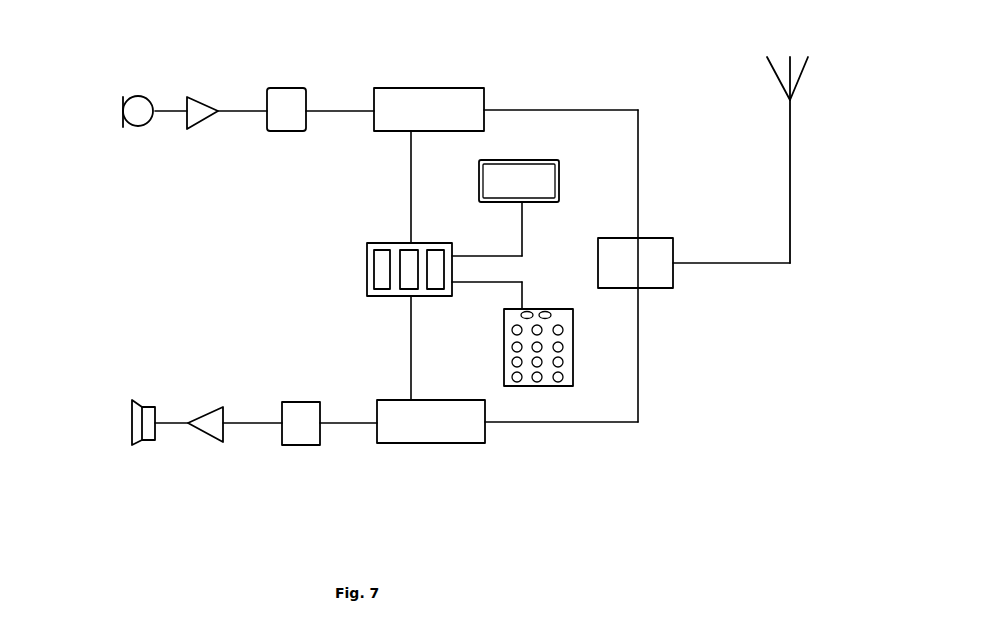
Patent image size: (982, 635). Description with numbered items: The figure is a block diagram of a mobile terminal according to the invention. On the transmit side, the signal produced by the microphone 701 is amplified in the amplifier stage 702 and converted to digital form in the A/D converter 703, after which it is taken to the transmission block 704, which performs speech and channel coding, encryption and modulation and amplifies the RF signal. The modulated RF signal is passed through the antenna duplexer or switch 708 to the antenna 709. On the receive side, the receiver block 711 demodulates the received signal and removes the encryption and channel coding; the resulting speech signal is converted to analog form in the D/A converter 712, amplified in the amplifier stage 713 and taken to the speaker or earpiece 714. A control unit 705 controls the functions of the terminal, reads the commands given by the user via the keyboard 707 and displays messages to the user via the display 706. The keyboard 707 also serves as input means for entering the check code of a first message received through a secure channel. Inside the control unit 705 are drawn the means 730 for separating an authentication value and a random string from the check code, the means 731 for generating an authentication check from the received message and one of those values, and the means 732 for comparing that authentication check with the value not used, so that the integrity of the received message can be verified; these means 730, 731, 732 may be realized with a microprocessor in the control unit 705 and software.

The microphone 701 is at (138, 83).
The amplifier stage 702 is at (202, 83).
The A/D converter 703 is at (286, 78).
The transmission block 704 is at (429, 78).
The control unit 705 is at (371, 269).
The display 706 is at (562, 178).
The keyboard 707 is at (565, 352).
The antenna duplexer or switch 708 is at (664, 281).
The antenna 709 is at (814, 160).
The receiver block 711 is at (431, 455).
The D/A converter 712 is at (315, 466).
The amplifier stage 713 is at (218, 463).
The speaker or earpiece 714 is at (137, 455).
The means for separating an authentication value and a random string 730 is at (342, 258).
The means for generating an authentication check 731 is at (363, 249).
The means for comparing the authentication check 732 is at (388, 240).